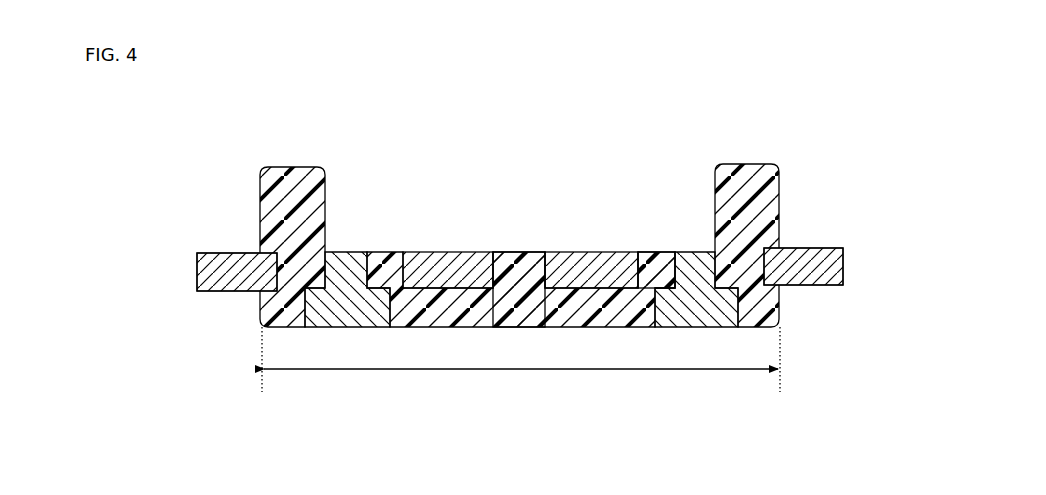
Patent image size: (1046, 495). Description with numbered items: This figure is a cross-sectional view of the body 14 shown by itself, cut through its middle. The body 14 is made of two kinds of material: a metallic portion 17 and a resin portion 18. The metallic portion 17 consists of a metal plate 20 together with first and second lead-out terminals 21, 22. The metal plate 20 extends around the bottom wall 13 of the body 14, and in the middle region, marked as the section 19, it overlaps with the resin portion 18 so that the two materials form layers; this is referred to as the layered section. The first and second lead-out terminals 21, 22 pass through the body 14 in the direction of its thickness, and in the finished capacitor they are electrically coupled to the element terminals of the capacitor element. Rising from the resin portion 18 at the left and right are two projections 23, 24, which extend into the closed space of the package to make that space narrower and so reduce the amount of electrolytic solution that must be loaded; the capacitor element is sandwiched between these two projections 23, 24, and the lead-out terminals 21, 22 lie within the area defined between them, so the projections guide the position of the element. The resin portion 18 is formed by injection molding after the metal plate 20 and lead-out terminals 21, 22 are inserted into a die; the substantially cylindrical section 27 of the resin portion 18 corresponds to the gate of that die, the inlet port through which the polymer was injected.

The bottom wall 13 is at (507, 252).
The body 14 is at (434, 106).
The metallic portion 17 is at (847, 253).
The resin portion 18 is at (645, 249).
The section 19 is at (469, 370).
The metal plate 20 is at (210, 256).
The first lead-out terminal 21 is at (357, 252).
The second lead-out terminal 22 is at (695, 252).
The projection 23 is at (272, 176).
The projection 24 is at (752, 170).
The substantially cylindrical section 27 is at (526, 252).